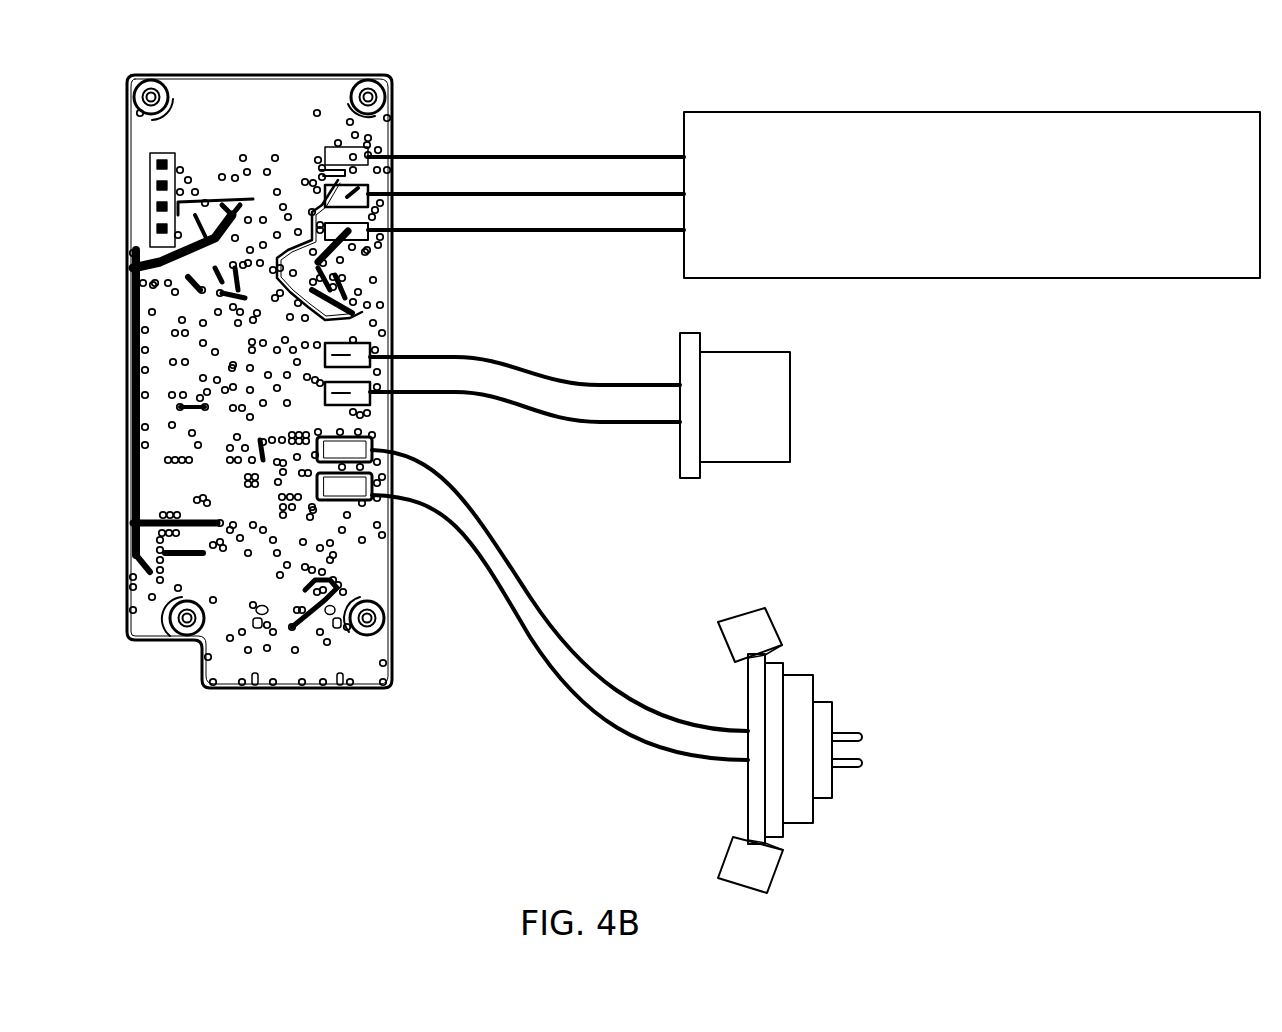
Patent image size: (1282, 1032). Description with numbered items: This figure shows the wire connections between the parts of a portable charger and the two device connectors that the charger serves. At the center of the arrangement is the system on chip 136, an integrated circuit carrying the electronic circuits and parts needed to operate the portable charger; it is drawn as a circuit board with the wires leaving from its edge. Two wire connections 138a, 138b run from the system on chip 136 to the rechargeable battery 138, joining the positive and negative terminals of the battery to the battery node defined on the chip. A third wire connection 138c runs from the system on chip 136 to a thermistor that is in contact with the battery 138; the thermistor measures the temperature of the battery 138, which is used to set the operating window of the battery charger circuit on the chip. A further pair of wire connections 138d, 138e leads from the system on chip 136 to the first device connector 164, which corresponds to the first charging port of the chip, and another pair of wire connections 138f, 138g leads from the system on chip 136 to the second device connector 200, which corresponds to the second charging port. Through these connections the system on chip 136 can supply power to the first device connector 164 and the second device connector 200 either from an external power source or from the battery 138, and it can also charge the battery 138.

The system on chip (SoC) 136 is at (243, 98).
The rechargeable battery 138 is at (1003, 133).
The wire connection 138a is at (458, 157).
The wire connection 138b is at (592, 230).
The wire connection 138c is at (520, 194).
The wire connection 138d is at (528, 597).
The wire connection 138e is at (573, 695).
The wire connection 138f is at (470, 357).
The wire connection 138g is at (557, 410).
The first device connector 164 is at (793, 682).
The second device connector 200 is at (735, 447).